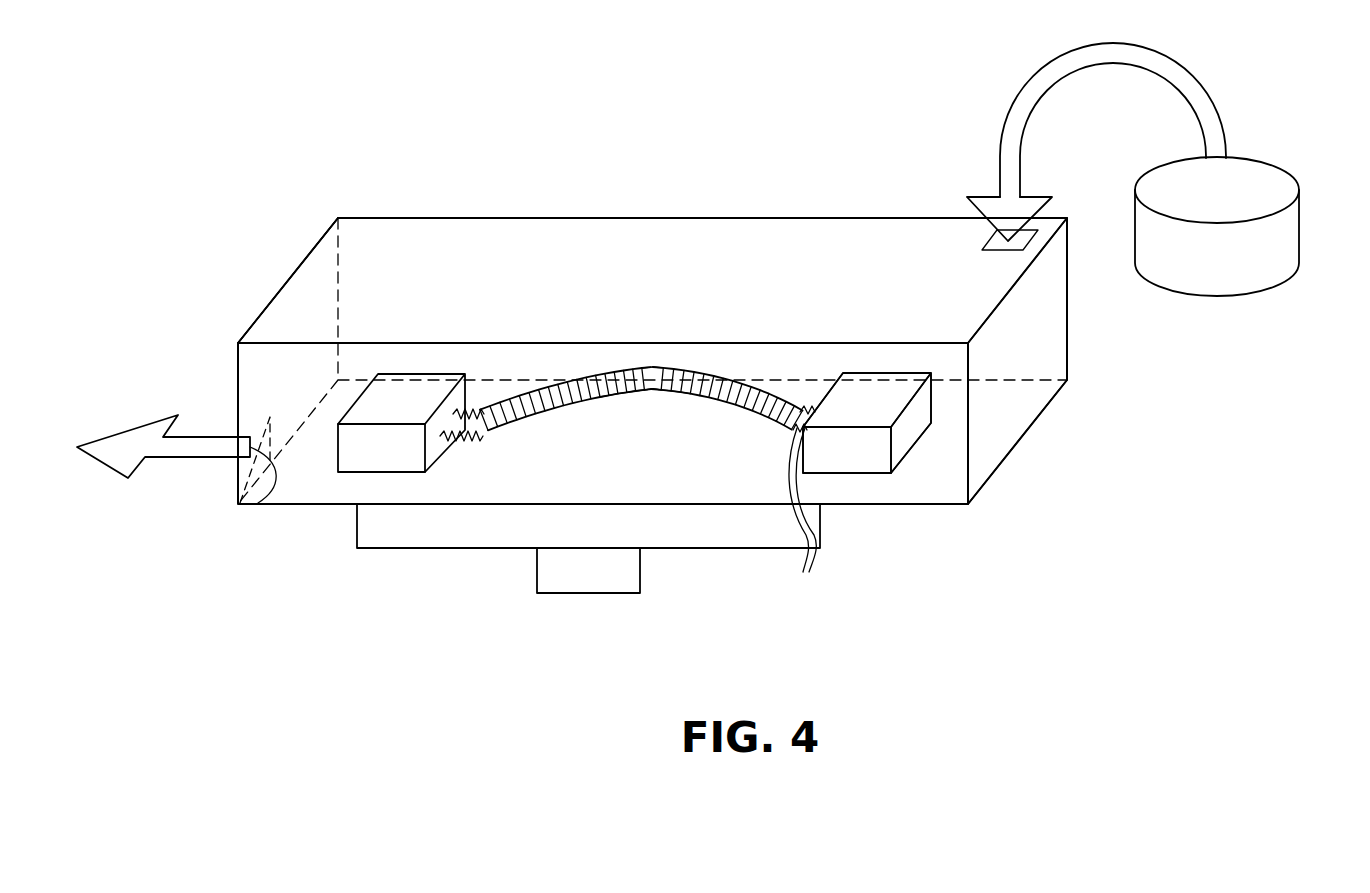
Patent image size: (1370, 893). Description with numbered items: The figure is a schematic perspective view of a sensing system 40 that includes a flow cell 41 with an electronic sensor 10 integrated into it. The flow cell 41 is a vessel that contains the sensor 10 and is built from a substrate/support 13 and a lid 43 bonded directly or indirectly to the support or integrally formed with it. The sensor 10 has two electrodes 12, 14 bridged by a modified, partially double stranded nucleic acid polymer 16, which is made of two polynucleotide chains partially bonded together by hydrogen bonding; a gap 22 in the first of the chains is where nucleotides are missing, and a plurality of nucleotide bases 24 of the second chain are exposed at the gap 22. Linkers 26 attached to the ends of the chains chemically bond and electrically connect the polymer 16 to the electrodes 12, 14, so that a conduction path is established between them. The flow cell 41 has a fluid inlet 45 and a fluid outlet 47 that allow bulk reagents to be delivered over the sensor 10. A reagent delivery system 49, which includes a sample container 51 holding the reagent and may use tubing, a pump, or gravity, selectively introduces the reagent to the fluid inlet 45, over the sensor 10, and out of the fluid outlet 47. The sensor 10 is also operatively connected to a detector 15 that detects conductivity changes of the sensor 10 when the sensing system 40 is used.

The electronic sensor 10 is at (932, 456).
The electrode 12 is at (412, 395).
The substrate/support 13 is at (988, 423).
The electrode 14 is at (877, 397).
The detector 15 is at (585, 572).
The modified, partially double stranded nucleic acid polymer 16 is at (551, 362).
The gap 22 is at (647, 414).
The nucleotide bases 24 is at (658, 370).
The linker 26 is at (798, 515).
The sensing system 40 is at (326, 176).
The flow cell 41 is at (681, 214).
The lid 43 is at (503, 263).
The fluid inlet 45 is at (1035, 236).
The fluid outlet 47 is at (262, 503).
The reagent delivery system 49 is at (1245, 118).
The sample container 51 is at (1265, 240).